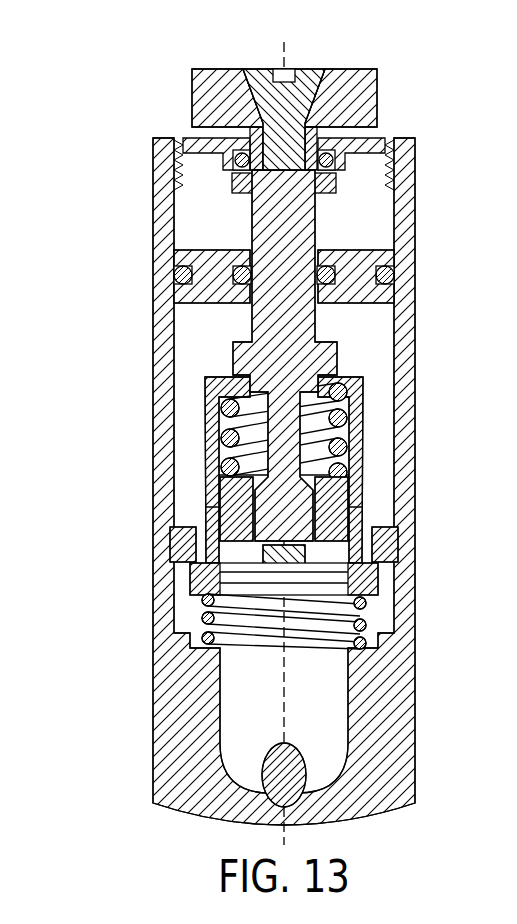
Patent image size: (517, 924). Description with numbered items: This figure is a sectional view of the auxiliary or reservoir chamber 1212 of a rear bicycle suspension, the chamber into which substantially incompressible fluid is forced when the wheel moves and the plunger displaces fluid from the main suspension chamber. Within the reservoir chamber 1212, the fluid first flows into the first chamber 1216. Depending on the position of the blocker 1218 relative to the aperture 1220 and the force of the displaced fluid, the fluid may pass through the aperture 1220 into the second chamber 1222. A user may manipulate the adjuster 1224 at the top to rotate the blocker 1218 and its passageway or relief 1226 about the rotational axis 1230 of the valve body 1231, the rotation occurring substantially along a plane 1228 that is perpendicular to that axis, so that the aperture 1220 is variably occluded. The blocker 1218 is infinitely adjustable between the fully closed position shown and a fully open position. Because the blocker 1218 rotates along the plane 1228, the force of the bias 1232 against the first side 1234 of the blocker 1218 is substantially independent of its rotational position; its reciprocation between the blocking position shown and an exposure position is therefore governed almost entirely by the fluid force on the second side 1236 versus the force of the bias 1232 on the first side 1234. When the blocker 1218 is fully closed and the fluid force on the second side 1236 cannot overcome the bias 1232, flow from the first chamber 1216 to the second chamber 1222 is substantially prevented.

The auxiliary or reservoir chamber 1212 is at (434, 232).
The first chamber 1216 is at (340, 737).
The blocker 1218 is at (349, 485).
The aperture 1220 is at (353, 505).
The second chamber 1222 is at (375, 322).
The adjuster 1224 is at (368, 93).
The passageway or relief 1226 is at (233, 525).
The plane 1228 is at (430, 533).
The rotational axis 1230 is at (285, 431).
The valve body 1231 is at (337, 400).
The bias 1232 is at (220, 408).
The first side of the blocker 1234 is at (217, 467).
The second side of the blocker 1236 is at (330, 542).